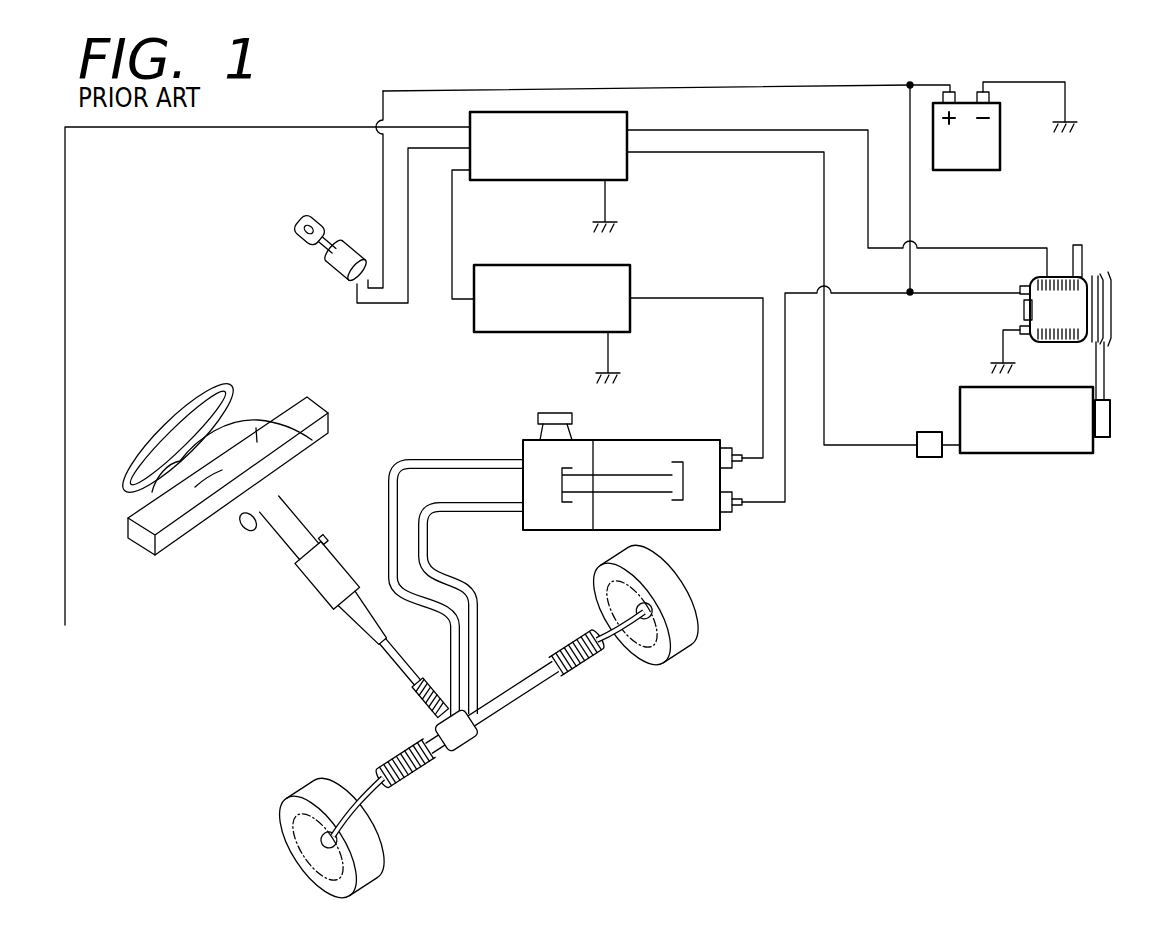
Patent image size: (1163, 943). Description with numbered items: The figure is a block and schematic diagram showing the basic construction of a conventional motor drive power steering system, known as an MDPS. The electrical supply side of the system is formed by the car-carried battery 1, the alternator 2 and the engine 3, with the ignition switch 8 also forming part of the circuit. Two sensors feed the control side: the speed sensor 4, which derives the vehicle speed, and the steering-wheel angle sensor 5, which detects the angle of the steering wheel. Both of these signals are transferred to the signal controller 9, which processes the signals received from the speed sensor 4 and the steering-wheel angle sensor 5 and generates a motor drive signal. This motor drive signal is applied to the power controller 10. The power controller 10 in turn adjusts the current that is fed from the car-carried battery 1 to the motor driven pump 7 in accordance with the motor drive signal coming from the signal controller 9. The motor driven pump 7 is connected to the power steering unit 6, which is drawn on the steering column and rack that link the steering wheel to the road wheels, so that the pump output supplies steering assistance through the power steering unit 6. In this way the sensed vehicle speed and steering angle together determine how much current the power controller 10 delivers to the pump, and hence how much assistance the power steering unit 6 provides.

The car-carried battery 1 is at (1001, 146).
The alternator 2 is at (1110, 292).
The engine 3 is at (1057, 455).
The speed sensor 4 is at (918, 430).
The steering-wheel angle sensor 5 is at (338, 626).
The power steering unit 6 is at (476, 740).
The motor driven pump 7 is at (683, 440).
The ignition switch 8 is at (346, 278).
The signal controller 9 is at (628, 176).
The power controller 10 is at (633, 318).